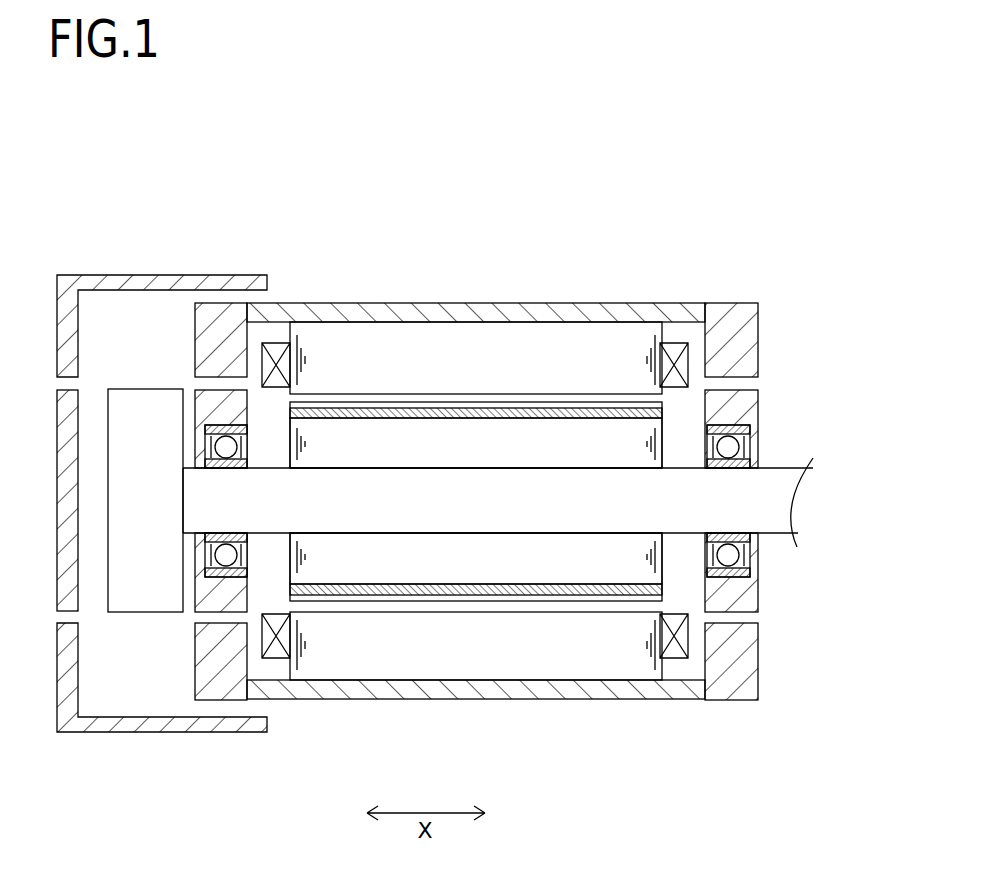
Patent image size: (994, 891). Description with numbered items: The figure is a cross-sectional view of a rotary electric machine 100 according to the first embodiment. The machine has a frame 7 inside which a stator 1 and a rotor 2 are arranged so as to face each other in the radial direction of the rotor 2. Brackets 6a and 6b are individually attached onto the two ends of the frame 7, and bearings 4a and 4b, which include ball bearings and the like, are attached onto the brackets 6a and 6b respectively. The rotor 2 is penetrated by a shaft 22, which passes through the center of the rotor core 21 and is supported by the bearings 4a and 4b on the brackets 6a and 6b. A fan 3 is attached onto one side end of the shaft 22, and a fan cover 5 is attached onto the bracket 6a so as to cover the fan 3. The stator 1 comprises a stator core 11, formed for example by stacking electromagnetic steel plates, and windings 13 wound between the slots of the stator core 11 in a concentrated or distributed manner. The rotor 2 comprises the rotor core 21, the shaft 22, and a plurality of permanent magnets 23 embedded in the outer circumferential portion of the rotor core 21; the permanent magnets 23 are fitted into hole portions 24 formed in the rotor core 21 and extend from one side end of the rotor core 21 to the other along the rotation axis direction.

The rotary electric machine 100 is at (498, 393).
The stator 1 is at (475, 440).
The rotor 2 is at (498, 400).
The fan 3 is at (142, 410).
The bearing 4a is at (225, 423).
The bearing 4b is at (718, 430).
The fan cover 5 is at (110, 288).
The bracket 6a is at (203, 317).
The bracket 6b is at (745, 320).
The frame 7 is at (552, 310).
The stator core 11 is at (318, 340).
The windings 13 is at (278, 353).
The rotor core 21 is at (461, 437).
The shaft 22 is at (418, 485).
The permanent magnets 23 is at (393, 412).
The hole portions 24 is at (512, 406).